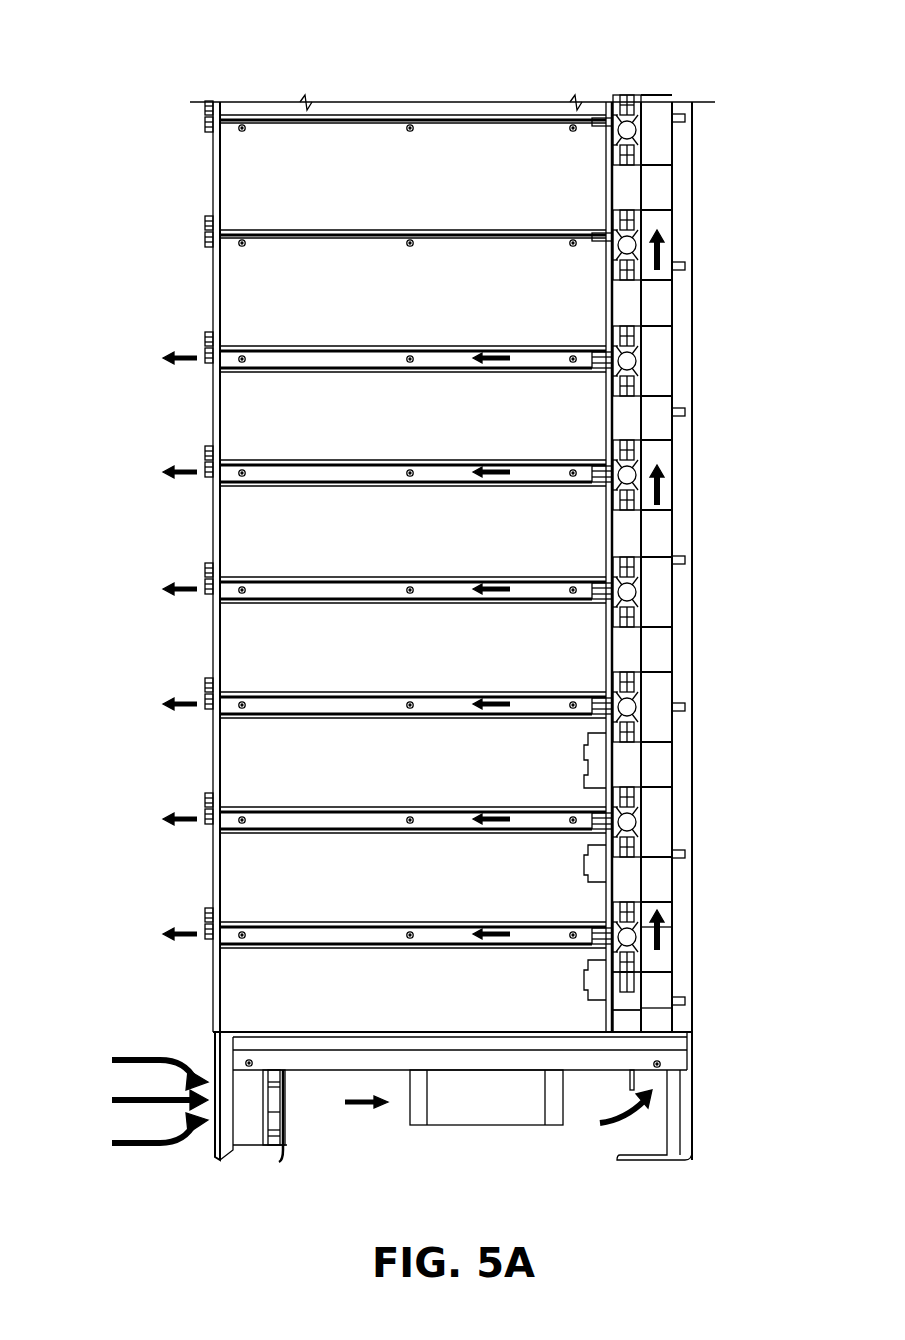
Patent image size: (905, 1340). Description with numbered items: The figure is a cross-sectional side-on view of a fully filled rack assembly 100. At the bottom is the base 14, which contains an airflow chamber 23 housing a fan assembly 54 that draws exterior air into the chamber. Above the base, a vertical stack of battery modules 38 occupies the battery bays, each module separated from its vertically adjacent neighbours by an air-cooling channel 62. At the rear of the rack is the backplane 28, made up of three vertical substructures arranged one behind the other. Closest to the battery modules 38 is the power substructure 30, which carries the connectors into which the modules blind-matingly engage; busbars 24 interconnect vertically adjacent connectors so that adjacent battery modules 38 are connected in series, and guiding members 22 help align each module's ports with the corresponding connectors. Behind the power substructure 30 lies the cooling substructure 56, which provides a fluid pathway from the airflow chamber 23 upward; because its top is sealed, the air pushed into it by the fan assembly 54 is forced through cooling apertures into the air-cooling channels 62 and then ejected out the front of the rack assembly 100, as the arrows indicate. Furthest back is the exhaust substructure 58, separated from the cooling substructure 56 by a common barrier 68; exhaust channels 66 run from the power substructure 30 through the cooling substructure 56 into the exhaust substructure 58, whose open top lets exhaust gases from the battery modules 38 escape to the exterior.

The rack assembly 100 is at (92, 52).
The backplane 28 is at (697, 82).
The battery module 38 is at (250, 292).
The air-cooling channel 62 is at (300, 580).
The busbar 24 is at (642, 575).
The power substructure 30 is at (636, 989).
The cooling substructure 56 is at (670, 683).
The exhaust channel 66 is at (655, 884).
The common interface or barrier 68 is at (675, 303).
The exhaust substructure 58 is at (690, 434).
The guiding member 22 is at (598, 856).
The base 14 is at (211, 1048).
The airflow chamber 23 is at (326, 1135).
The fan assembly 54 is at (265, 1124).